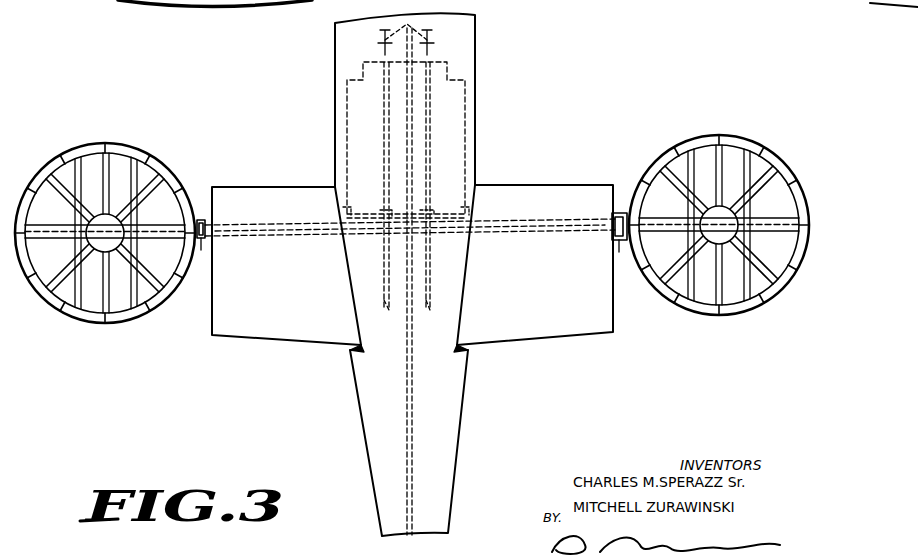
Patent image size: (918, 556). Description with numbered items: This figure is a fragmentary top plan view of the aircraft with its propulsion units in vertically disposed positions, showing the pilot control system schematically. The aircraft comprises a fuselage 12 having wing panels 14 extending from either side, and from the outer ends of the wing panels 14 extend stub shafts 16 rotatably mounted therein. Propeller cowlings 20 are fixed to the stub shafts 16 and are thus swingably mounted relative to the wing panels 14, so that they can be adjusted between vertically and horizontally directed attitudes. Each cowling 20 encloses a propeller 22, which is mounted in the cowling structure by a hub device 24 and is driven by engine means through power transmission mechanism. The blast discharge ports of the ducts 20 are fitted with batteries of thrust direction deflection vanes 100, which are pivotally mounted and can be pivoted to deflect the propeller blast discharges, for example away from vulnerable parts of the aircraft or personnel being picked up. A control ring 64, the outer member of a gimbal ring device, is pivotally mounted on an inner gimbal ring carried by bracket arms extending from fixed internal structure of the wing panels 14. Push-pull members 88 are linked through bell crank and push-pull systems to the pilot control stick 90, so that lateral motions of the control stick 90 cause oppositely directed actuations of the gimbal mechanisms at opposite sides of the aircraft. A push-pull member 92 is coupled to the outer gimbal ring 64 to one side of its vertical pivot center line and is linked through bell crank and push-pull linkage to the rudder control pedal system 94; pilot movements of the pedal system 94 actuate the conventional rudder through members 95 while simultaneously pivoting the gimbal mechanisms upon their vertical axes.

The fuselage 12 is at (450, 401).
The wing panels 14 is at (290, 319).
The stub shafts 16 is at (202, 212).
The propeller cowlings 20 is at (170, 322).
The propellers 22 is at (75, 146).
The hub devices 24 is at (412, 229).
The control ring 64 is at (203, 248).
The push-pull member 88 is at (270, 238).
The pilot control stick 90 is at (442, 58).
The push-pull member 92 is at (292, 224).
The rudder control pedal system 94 is at (407, 24).
The members 95 is at (386, 312).
The thrust direction deflection vanes 100 is at (128, 158).